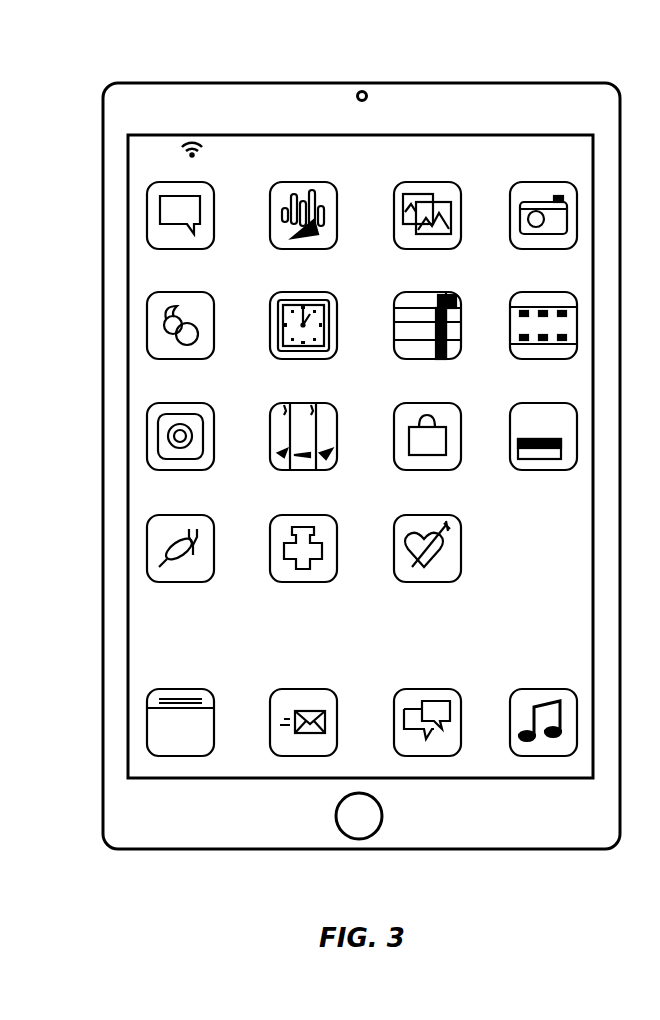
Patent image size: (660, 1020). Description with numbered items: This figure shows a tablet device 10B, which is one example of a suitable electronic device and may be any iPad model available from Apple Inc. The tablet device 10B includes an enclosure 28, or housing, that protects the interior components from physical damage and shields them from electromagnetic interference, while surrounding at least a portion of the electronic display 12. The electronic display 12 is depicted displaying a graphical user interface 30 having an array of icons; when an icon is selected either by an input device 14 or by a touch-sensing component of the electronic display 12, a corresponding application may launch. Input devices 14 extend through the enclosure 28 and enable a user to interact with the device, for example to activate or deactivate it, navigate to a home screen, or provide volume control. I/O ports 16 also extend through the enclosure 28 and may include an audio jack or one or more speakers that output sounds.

The tablet device 10B is at (98, 74).
The electronic display 12 is at (594, 521).
The input devices 14 is at (557, 83).
The I/O ports 16 is at (208, 83).
The enclosure 28 is at (621, 447).
The graphical user interface 30 is at (568, 580).